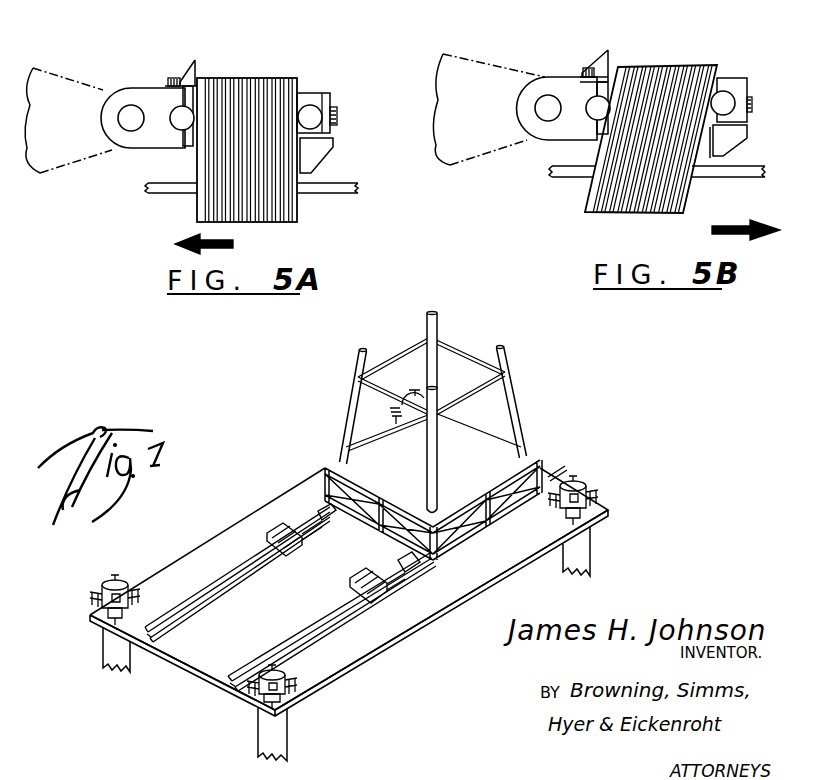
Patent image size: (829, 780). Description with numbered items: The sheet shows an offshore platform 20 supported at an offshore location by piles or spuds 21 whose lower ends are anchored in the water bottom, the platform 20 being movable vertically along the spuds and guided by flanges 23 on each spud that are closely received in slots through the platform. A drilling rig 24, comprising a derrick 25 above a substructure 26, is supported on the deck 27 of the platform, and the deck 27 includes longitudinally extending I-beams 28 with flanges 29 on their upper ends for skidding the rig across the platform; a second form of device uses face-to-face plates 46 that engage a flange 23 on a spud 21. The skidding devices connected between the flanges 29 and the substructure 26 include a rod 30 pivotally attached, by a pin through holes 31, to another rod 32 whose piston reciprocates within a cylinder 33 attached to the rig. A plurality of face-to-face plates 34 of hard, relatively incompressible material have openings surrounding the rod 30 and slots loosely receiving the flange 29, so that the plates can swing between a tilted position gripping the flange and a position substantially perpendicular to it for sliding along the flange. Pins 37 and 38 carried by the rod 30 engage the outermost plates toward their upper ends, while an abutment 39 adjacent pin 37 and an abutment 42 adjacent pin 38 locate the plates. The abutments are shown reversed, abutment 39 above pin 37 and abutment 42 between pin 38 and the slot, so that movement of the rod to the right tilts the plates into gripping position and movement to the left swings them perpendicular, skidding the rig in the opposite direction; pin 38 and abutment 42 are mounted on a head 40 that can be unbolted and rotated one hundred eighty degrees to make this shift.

In FIG. 1, the platform 20 is at (255, 504).
In FIG. 1, the piles or spuds 21 is at (110, 645).
In FIG. 1, the flanges 23 is at (115, 577).
In FIG. 1, the drilling rig 24 is at (530, 372).
In FIG. 1, the derrick 25 is at (438, 313).
In FIG. 1, the substructure 26 is at (548, 462).
In FIG. 1, the deck 27 is at (303, 597).
In FIG. 1, the I-beams 28 is at (340, 627).
In FIG. 5B, the flanges 29 is at (557, 182).
In FIG. 1, the flanges 29 is at (247, 563).
In FIG. 5A, the rod 30 is at (300, 90).
In FIG. 1, the rod 30 is at (308, 527).
In FIG. 5B, the holes 31 is at (548, 96).
In FIG. 5A, the rod 32 is at (63, 70).
In FIG. 1, the cylinder 33 is at (413, 563).
In FIG. 5A, the face-to-face plates 34 is at (197, 157).
In FIG. 5B, the face-to-face plates 34 is at (660, 64).
In FIG. 1, the face-to-face plates 34 is at (360, 577).
In FIG. 5A, the pin 37 is at (175, 110).
In FIG. 5B, the pin 38 is at (733, 99).
In FIG. 5B, the abutment 39 is at (610, 58).
In FIG. 5A, the head 40 is at (333, 107).
In FIG. 5A, the abutment 42 is at (320, 157).
In FIG. 1, the face-to-face plates 46 is at (297, 680).